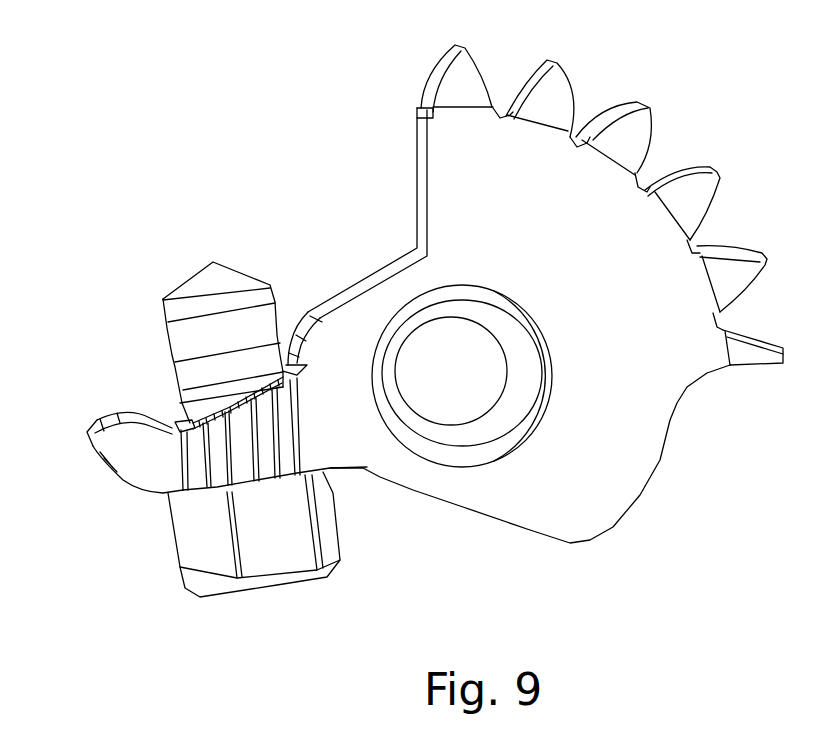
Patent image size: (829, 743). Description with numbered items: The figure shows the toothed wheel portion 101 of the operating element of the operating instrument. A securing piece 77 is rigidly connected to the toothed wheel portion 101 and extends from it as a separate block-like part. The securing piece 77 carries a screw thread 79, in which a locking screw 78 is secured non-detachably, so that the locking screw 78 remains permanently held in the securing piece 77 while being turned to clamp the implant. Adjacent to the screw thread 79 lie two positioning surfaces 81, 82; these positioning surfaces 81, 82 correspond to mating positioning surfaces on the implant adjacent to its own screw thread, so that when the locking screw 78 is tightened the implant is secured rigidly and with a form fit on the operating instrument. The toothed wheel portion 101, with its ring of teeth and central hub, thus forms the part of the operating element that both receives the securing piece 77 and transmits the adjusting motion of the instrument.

The toothed wheel portion 101 is at (582, 187).
The positioning surface 82 is at (307, 317).
The locking screw 78 is at (170, 337).
The screw thread 79 is at (180, 420).
The positioning surface 81 is at (97, 420).
The securing piece 77 is at (243, 452).